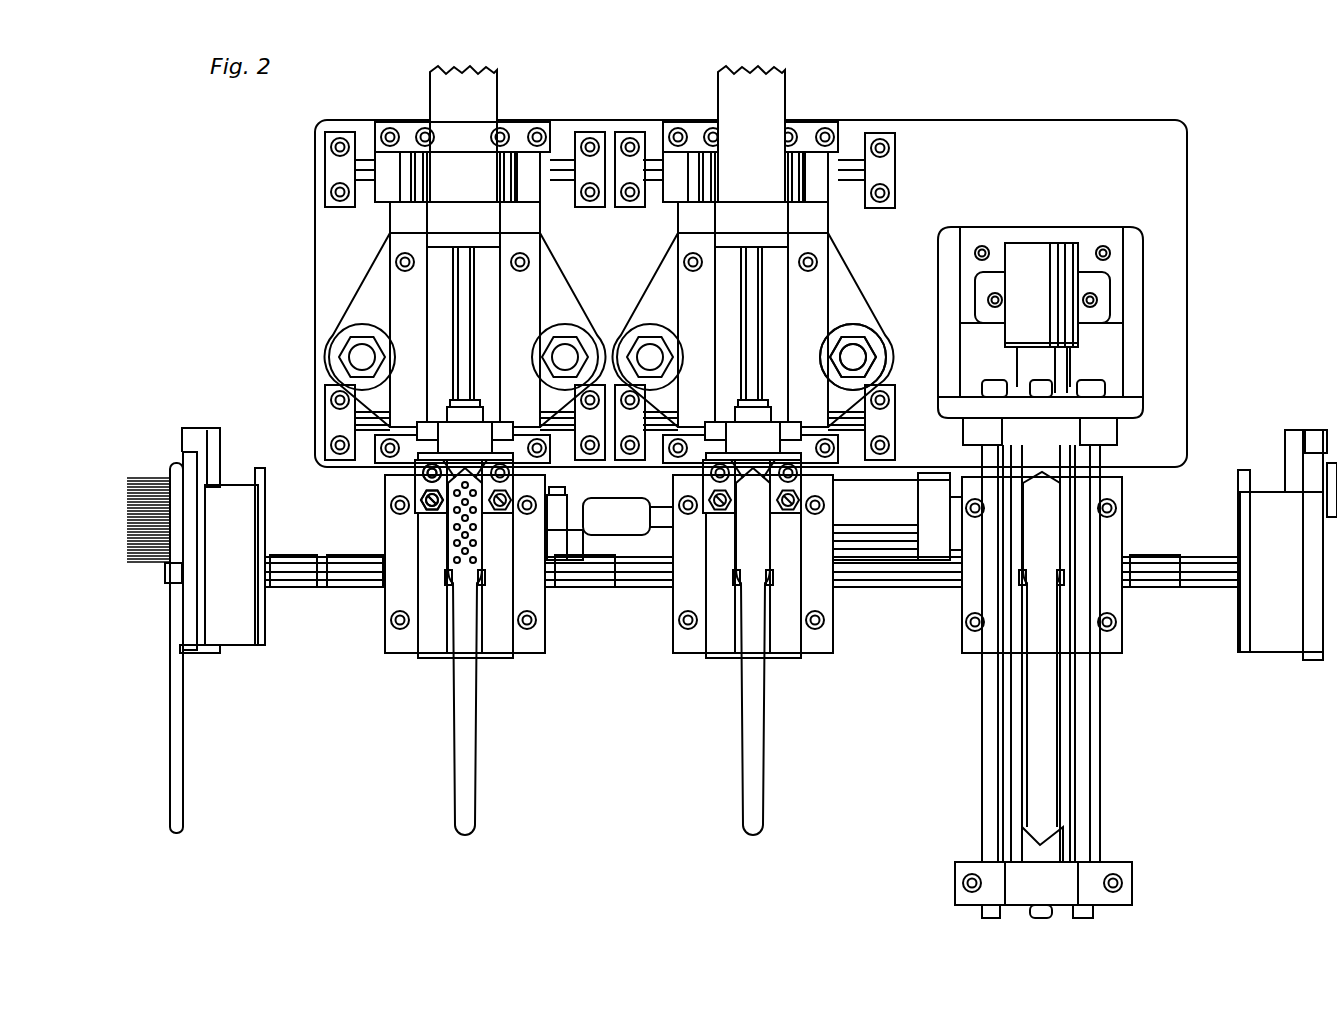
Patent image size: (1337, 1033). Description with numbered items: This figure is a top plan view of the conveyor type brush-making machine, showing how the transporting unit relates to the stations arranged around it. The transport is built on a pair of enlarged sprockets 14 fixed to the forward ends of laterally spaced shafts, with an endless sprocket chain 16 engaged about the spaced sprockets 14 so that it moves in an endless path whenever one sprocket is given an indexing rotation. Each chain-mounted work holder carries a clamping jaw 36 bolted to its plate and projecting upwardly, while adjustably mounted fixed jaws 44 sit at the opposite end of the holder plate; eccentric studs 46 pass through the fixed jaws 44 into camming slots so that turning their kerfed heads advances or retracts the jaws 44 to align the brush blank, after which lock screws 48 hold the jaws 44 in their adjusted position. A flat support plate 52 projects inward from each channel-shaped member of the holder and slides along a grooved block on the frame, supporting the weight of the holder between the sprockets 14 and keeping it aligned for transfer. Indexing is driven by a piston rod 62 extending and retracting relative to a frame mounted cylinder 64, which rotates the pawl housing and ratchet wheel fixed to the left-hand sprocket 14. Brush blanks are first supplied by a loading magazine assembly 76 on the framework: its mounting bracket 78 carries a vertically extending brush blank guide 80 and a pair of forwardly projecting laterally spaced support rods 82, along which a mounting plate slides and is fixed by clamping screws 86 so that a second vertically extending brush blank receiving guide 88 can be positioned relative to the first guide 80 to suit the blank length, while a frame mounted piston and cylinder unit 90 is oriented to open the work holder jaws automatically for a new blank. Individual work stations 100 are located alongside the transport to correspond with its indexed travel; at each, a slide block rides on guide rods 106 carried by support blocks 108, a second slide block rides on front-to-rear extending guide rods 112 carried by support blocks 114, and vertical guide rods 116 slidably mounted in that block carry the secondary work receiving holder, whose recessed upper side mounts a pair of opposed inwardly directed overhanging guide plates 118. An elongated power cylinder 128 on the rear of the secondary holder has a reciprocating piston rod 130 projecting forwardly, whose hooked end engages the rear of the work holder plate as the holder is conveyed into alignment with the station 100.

The sprocket 14 is at (368, 590).
The endless sprocket chain 16 is at (582, 590).
The clamping jaw 36 is at (448, 573).
The fixed jaws 44 is at (418, 458).
The eccentric studs 46 is at (425, 502).
The lock screws 48 is at (425, 482).
The flat support plate 52 is at (1242, 477).
The piston rod 62 is at (663, 523).
The frame mounted cylinder 64 is at (893, 525).
The loading magazine assembly 76 is at (1127, 448).
The mounting bracket 78 is at (1130, 352).
The brush blank guide 80 is at (1032, 463).
The support rods 82 is at (1090, 717).
The clamping screws 86 is at (1123, 882).
The second brush blank receiving guide 88 is at (1047, 850).
The piston and cylinder unit 90 is at (1070, 243).
The work station 100 is at (340, 237).
The guide rods 106 is at (850, 158).
The support blocks 108 is at (622, 137).
The front-to-rear extending guide rods 112 is at (515, 170).
The support blocks 114 is at (517, 132).
The vertical guide rods 116 is at (867, 348).
The guide plates 118 is at (810, 322).
The power cylinder 128 is at (760, 80).
The piston rod 130 is at (750, 307).